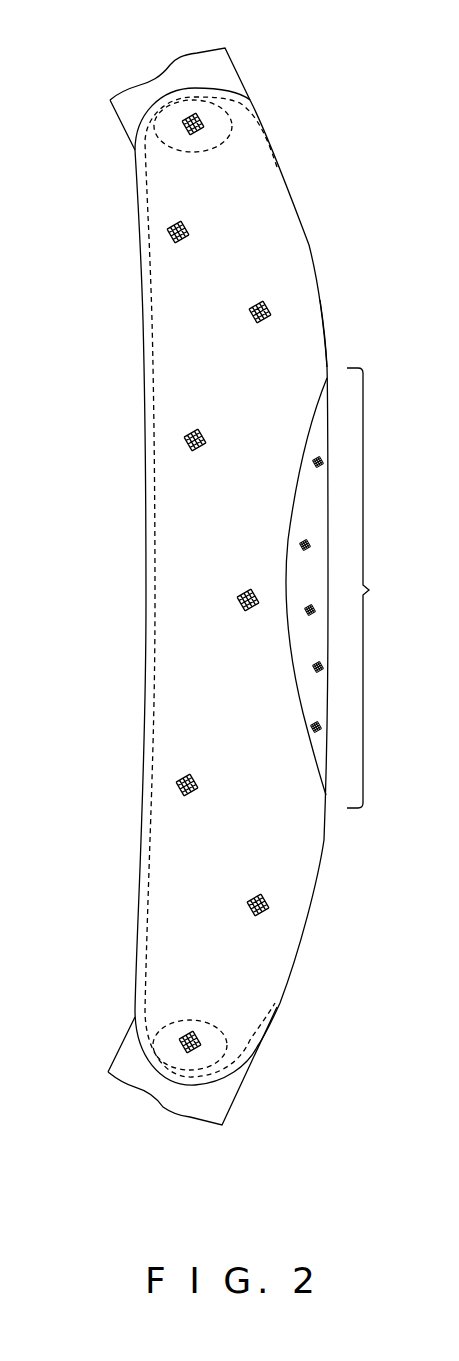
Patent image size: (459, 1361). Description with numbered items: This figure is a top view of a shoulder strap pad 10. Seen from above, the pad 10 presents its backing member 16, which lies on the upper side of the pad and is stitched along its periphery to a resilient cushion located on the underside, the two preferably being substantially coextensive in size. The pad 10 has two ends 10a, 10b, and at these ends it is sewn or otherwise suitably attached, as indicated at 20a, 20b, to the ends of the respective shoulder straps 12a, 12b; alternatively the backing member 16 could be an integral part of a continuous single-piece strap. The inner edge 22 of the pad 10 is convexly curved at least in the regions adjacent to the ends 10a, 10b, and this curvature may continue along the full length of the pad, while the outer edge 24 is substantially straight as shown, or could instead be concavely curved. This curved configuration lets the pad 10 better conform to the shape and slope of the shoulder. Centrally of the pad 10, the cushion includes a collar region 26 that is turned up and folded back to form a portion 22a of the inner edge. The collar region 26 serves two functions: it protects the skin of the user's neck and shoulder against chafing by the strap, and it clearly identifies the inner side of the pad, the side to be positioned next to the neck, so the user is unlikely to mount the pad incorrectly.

The shoulder strap pad 10 is at (228, 568).
The first end of the pad 10a is at (243, 135).
The second end of the pad 10b is at (250, 1020).
The first shoulder strap 12a is at (240, 85).
The second shoulder strap 12b is at (222, 1107).
The backing member 16 is at (330, 318).
The first attachment 20a is at (172, 143).
The second attachment 20b is at (170, 1038).
The inner edge 22 is at (309, 243).
The portion of the inner edge 22a is at (384, 588).
The outer edge 24 is at (140, 714).
The collar region 26 is at (307, 632).